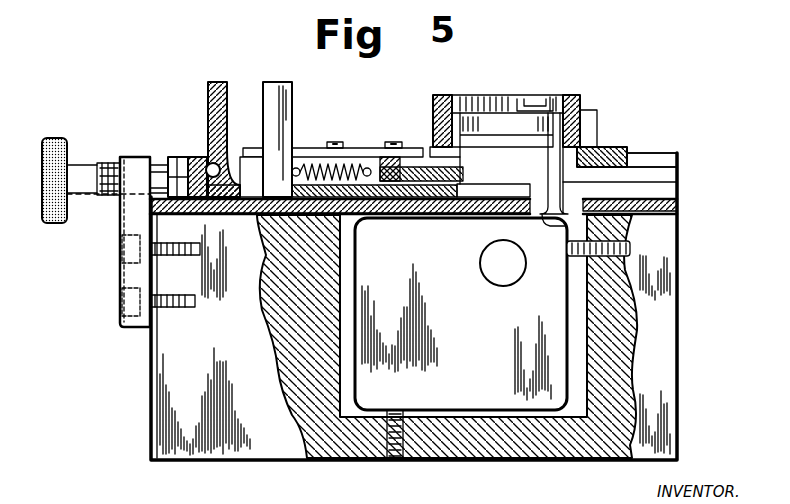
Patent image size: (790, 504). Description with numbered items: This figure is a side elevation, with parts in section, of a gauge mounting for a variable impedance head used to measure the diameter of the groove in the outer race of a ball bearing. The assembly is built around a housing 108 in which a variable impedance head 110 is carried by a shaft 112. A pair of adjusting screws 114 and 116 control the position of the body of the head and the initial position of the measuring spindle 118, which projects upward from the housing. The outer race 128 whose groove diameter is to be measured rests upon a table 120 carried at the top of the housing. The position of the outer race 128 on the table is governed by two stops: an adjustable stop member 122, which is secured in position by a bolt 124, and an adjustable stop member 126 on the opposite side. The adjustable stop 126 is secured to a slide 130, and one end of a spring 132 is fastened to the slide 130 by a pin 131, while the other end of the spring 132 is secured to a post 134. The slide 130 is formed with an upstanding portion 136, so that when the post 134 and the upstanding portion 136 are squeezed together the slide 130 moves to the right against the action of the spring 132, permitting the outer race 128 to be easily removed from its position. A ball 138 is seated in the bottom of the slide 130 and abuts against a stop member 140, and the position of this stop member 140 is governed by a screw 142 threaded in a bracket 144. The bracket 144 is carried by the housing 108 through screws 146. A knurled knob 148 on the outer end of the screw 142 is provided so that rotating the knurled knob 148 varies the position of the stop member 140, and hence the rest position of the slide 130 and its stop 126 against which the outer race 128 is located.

The housing 108 is at (679, 353).
The variable impedance head 110 is at (498, 412).
The shaft 112 is at (498, 286).
The adjusting screw 114 is at (394, 460).
The adjusting screw 116 is at (630, 251).
The measuring spindle 118 is at (562, 194).
The table 120 is at (615, 147).
The adjustable stop member 122 is at (597, 113).
The bolt 124 is at (545, 99).
The adjustable stop member 126 is at (441, 95).
The outer race 128 is at (581, 96).
The slide 130 is at (247, 172).
The pin 131 is at (368, 177).
The spring 132 is at (319, 164).
The post 134 is at (292, 100).
The upstanding portion 136 is at (228, 95).
The ball 138 is at (212, 163).
The stop member 140 is at (178, 157).
The screw 142 is at (108, 196).
The bracket 144 is at (122, 230).
The screws 146 is at (122, 258).
The knurled knob 148 is at (60, 138).